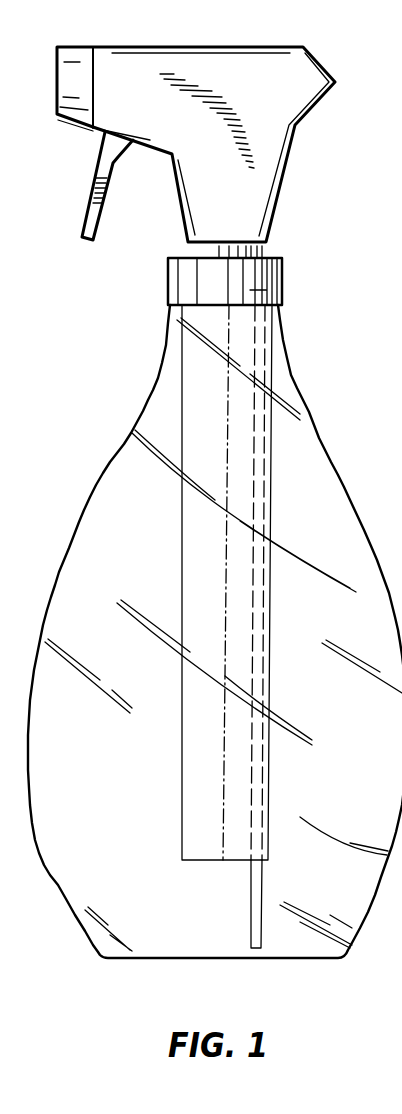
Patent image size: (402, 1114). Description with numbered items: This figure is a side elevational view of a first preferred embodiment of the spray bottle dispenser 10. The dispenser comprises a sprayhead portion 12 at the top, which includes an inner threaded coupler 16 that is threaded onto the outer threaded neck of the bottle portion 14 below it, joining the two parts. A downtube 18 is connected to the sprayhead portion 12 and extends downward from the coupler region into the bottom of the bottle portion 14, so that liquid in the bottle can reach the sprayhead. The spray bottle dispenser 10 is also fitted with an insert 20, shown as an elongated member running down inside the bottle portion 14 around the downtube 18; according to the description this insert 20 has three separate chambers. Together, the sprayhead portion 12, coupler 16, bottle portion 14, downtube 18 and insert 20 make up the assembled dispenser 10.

The spray bottle dispenser 10 is at (113, 412).
The sprayhead portion 12 is at (252, 192).
The bottle portion 14 is at (300, 468).
The inner threaded coupler 16 is at (278, 283).
The downtube 18 is at (265, 925).
The insert 20 is at (188, 747).